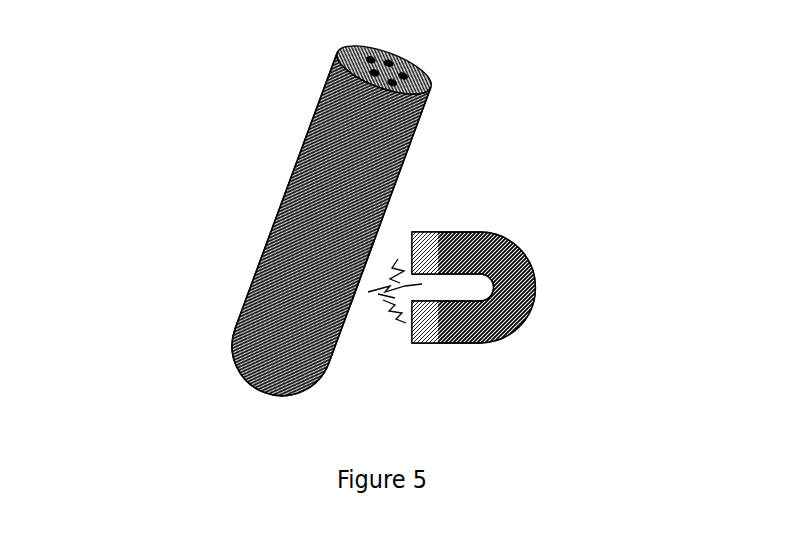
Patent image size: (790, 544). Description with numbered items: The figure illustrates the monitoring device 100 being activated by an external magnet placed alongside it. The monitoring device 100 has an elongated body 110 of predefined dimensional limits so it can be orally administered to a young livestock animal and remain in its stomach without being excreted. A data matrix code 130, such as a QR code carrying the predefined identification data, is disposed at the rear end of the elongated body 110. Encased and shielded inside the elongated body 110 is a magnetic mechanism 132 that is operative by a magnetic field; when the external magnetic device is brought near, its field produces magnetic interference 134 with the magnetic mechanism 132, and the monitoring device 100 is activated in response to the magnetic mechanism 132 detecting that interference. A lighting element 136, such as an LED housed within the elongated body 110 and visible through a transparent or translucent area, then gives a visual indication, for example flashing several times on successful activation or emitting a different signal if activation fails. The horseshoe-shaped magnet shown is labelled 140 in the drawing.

The monitoring device 100 is at (349, 220).
The elongated body 110 is at (324, 231).
The data matrix code 130 is at (393, 72).
The magnetic mechanism 132 is at (352, 293).
The magnetic interference 134 is at (388, 300).
The lighting element 136 is at (360, 250).
The magnet 140 is at (560, 251).